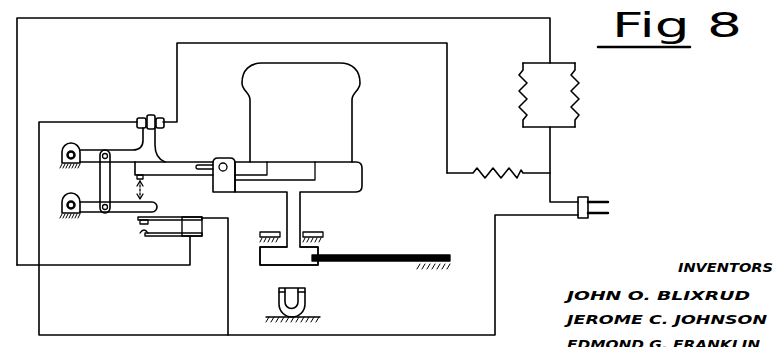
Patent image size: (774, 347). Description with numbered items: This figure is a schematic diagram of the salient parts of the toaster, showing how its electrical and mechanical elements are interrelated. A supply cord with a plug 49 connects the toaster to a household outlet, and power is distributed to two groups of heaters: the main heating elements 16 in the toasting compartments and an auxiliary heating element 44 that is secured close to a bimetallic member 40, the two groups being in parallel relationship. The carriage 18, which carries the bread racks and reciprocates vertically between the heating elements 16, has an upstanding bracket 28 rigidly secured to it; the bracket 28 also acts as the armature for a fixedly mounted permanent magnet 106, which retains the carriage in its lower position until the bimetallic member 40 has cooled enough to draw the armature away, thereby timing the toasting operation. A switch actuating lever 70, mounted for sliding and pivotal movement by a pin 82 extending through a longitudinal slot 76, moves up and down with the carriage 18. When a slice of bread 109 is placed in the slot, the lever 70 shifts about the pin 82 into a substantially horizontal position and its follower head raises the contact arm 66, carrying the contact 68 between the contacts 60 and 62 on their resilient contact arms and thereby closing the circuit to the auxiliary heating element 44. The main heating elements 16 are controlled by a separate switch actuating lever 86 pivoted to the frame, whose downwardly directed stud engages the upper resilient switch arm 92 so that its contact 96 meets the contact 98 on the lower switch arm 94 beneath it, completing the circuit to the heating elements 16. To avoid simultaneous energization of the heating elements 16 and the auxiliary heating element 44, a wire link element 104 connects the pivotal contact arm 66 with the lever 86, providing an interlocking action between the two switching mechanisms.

The heating elements 16 is at (571, 97).
The carriage 18 is at (337, 185).
The upstanding bracket 28 is at (300, 263).
The bimetallic member 40 is at (389, 255).
The auxiliary heating element 44 is at (490, 173).
The plug 49 is at (583, 197).
The contact 60 is at (137, 120).
The contact 62 is at (164, 118).
The contact arm 66 is at (134, 157).
The contact 68 is at (150, 115).
The switch actuating lever 70 is at (167, 162).
The longitudinal slot 76 is at (197, 165).
The pin 82 is at (224, 163).
The switch actuating lever 86 is at (150, 207).
The upper resilient switch arm 92 is at (172, 218).
The lower switch arm 94 is at (165, 237).
The contact 96 is at (140, 225).
The contact 98 is at (141, 233).
The wire link element 104 is at (100, 182).
The permanent magnet 106 is at (279, 300).
The slice of bread 109 is at (347, 80).